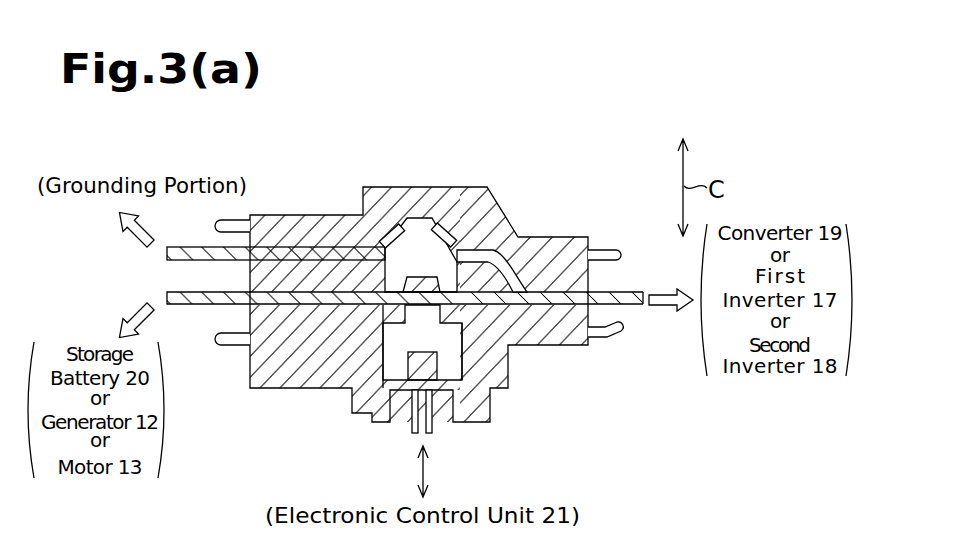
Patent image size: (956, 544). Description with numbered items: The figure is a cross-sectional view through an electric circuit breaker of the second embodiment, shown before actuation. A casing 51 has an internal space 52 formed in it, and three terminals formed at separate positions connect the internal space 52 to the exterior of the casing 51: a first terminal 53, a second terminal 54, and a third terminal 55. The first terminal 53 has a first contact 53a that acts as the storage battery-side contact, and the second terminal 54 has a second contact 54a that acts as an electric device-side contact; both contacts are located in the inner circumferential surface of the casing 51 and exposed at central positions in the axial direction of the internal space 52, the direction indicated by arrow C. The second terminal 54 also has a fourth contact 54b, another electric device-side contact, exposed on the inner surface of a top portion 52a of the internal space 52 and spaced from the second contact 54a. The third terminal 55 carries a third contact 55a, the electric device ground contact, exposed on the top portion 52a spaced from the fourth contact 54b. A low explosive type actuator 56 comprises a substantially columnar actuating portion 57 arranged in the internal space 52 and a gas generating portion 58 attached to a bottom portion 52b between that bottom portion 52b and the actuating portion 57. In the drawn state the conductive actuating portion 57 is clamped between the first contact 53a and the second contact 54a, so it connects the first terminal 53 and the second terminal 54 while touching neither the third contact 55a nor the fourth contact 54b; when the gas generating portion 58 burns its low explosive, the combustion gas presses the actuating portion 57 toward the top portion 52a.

The casing 51 is at (265, 389).
The internal space 52 is at (477, 387).
The top portion 52a is at (420, 217).
The bottom portion 52b is at (449, 425).
The first terminal 53 is at (191, 306).
The first contact 53a is at (355, 368).
The second terminal 54 is at (640, 291).
The second contact 54a is at (452, 361).
The fourth contact 54b is at (463, 238).
The third terminal 55 is at (185, 246).
The third contact 55a is at (383, 234).
The low explosive type actuator 56 is at (419, 302).
The actuating portion 57 is at (323, 246).
The gas generating portion 58 is at (407, 392).